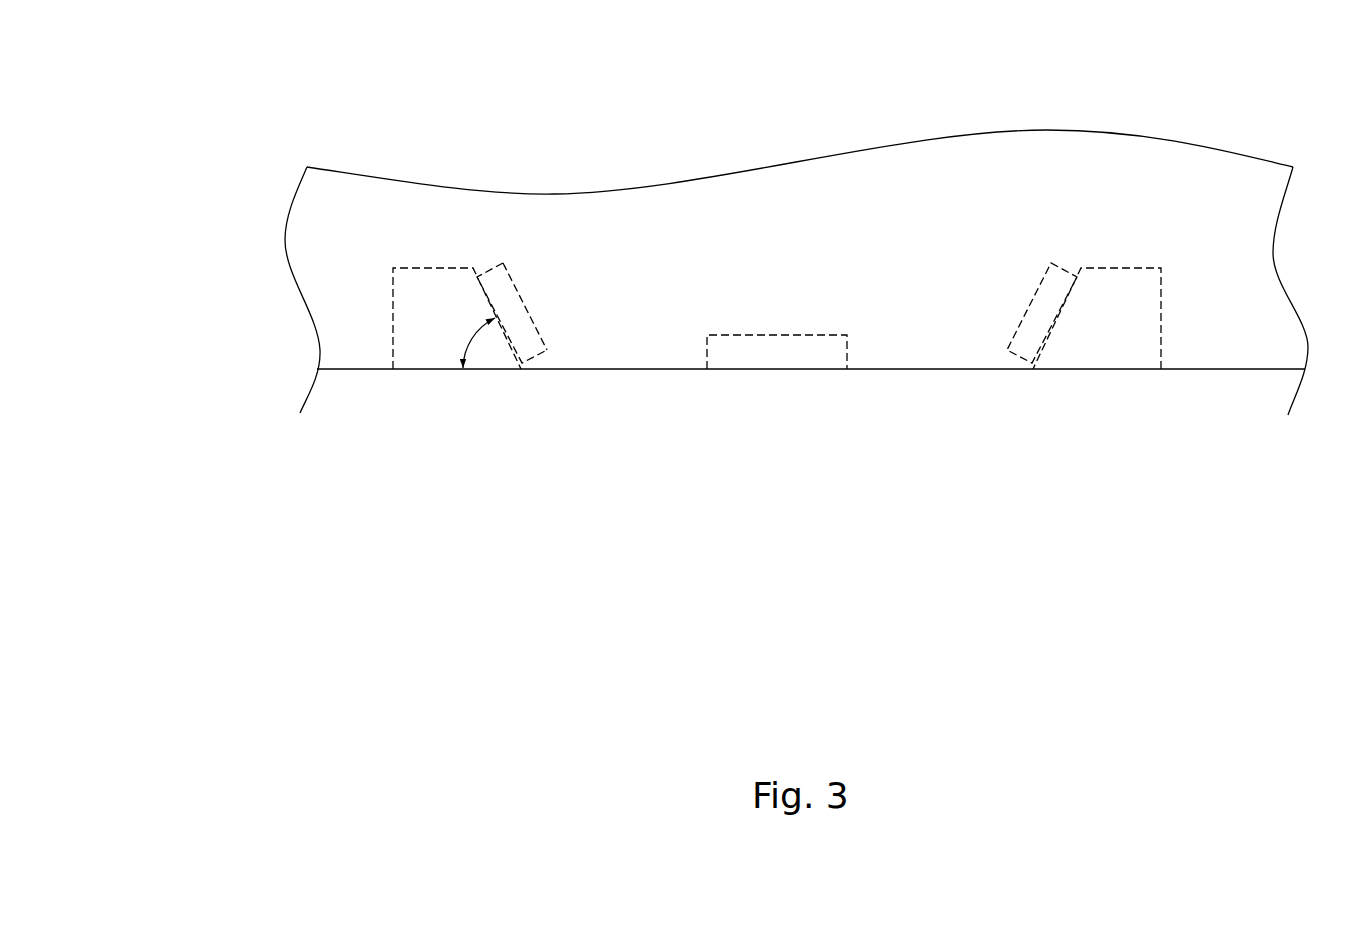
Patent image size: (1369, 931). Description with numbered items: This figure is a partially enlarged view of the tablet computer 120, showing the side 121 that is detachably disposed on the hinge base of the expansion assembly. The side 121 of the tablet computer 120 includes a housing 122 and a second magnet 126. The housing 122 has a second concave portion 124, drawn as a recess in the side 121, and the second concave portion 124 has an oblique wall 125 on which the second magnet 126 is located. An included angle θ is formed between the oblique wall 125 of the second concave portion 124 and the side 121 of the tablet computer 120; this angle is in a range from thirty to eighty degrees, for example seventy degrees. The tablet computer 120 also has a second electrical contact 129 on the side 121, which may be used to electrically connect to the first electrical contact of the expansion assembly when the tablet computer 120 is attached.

The tablet computer 120 is at (205, 82).
The side 121 is at (370, 374).
The housing 122 is at (303, 232).
The second concave portion 124 is at (388, 301).
The oblique wall 125 is at (516, 347).
The second magnet 126 is at (540, 332).
The second electrical contact 129 is at (780, 355).